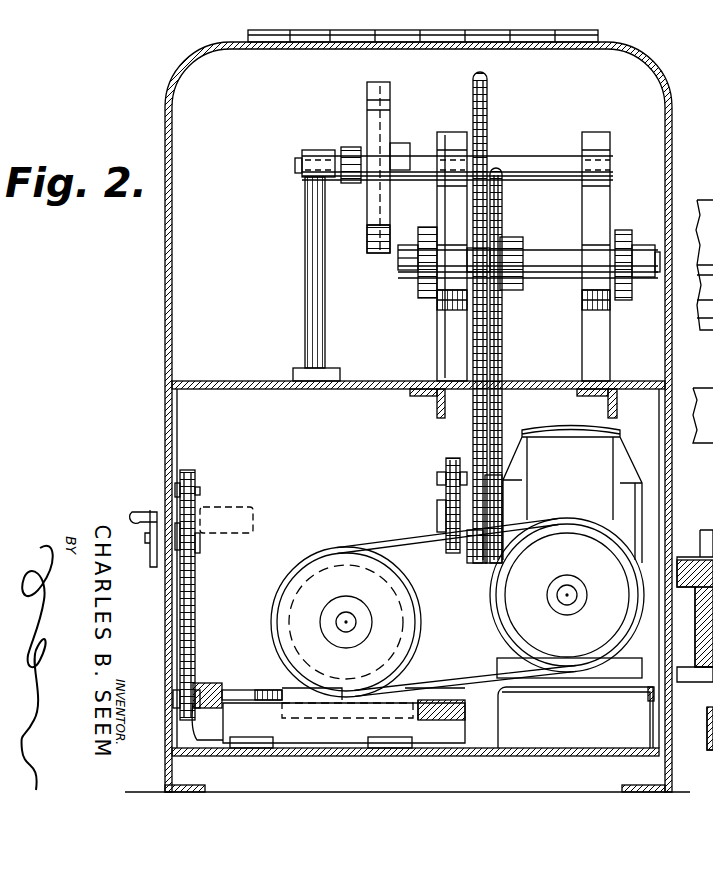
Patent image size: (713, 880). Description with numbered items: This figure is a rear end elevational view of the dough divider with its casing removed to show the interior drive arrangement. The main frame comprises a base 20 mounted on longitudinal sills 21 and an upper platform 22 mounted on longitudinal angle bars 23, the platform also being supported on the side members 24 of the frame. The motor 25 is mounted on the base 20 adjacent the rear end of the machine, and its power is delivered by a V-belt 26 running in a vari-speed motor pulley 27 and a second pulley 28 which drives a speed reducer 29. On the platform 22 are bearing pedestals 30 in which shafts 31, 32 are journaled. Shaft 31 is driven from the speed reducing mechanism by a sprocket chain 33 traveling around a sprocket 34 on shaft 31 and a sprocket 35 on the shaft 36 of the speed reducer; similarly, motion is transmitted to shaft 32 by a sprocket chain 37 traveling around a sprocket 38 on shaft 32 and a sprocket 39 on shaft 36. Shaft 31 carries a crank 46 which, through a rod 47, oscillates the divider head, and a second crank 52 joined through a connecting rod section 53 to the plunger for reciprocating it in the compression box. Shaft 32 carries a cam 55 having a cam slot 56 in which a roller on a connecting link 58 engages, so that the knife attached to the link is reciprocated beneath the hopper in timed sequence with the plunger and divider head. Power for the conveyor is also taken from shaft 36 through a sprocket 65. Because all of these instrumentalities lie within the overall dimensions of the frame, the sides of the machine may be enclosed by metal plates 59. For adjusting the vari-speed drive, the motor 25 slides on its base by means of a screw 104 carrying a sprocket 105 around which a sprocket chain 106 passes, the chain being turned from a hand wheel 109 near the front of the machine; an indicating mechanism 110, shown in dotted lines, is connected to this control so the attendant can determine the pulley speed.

The base 20 is at (573, 751).
The longitudinal sills 21 is at (663, 777).
The upper platform 22 is at (322, 386).
The longitudinal angle bars 23 is at (436, 398).
The side members 24 is at (178, 418).
The motor 25 is at (308, 563).
The V-belt 26 is at (395, 554).
The vari-speed motor pulley 27 is at (293, 621).
The second pulley 28 is at (515, 615).
The speed reducer 29 is at (540, 428).
The bearing pedestals 30 is at (440, 365).
The shaft 31 is at (550, 253).
The shaft 32 is at (540, 168).
The sprocket chain 33 is at (492, 378).
The sprocket 34 is at (502, 312).
The sprocket 35 is at (481, 566).
The shaft 36 is at (437, 510).
The sprocket chain 37 is at (470, 335).
The sprocket 38 is at (488, 110).
The sprocket 39 is at (458, 458).
The crank 46 is at (630, 300).
The rod 47 is at (643, 245).
The second crank 52 is at (418, 292).
The connecting rod section 53 is at (405, 246).
The cam 55 is at (368, 84).
The cam slot 56 is at (391, 86).
The connecting link 58 is at (348, 150).
The metal plates 59 is at (165, 462).
The sprocket 65 is at (438, 478).
The screw 104 is at (282, 704).
The sprocket 105 is at (215, 673).
The sprocket chain 106 is at (187, 590).
The hand wheel 109 is at (153, 568).
The indicating mechanism 110 is at (231, 507).